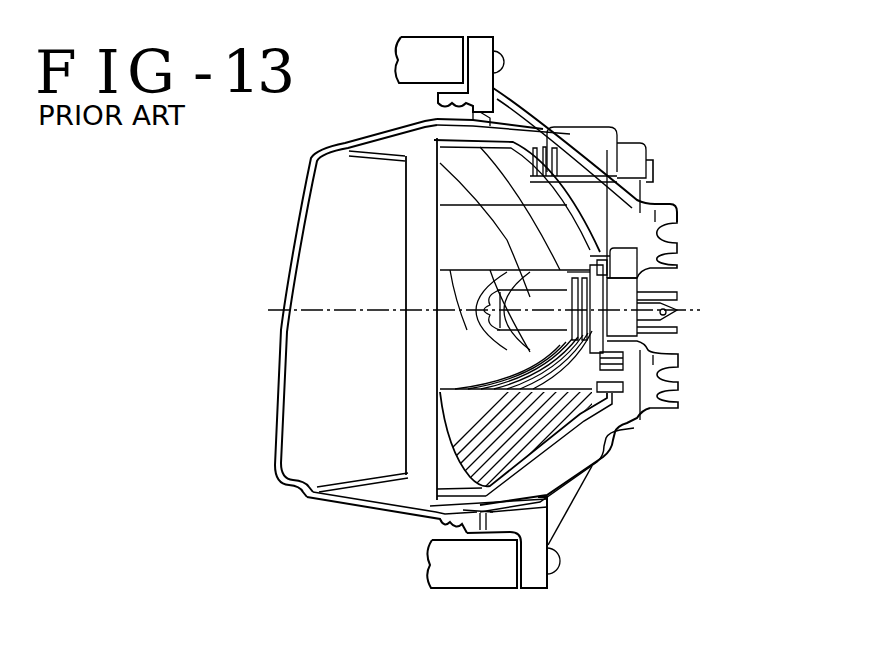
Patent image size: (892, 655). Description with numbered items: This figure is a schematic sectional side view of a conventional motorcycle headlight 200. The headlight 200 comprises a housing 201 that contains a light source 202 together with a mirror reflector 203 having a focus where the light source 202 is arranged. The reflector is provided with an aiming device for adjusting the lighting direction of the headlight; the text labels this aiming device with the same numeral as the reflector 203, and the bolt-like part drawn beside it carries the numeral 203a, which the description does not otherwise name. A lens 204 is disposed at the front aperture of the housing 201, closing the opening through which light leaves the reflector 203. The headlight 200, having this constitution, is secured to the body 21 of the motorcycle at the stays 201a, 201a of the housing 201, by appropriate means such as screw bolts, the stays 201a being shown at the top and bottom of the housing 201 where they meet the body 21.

The headlight 200 is at (284, 188).
The body 21 is at (418, 57).
The housing 201 is at (611, 458).
The stays 201a is at (480, 62).
The light source 202 is at (530, 296).
The mirror reflector 203 is at (588, 218).
The fixing bolt 203a is at (651, 153).
The lens 204 is at (280, 390).